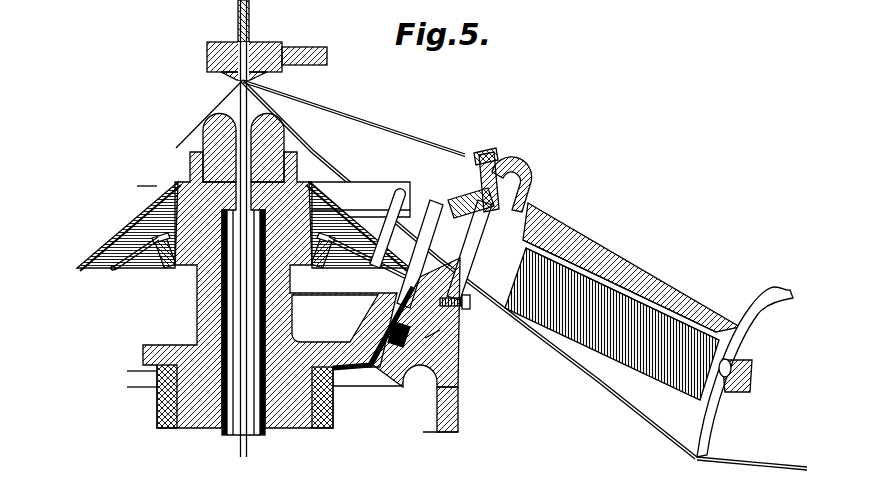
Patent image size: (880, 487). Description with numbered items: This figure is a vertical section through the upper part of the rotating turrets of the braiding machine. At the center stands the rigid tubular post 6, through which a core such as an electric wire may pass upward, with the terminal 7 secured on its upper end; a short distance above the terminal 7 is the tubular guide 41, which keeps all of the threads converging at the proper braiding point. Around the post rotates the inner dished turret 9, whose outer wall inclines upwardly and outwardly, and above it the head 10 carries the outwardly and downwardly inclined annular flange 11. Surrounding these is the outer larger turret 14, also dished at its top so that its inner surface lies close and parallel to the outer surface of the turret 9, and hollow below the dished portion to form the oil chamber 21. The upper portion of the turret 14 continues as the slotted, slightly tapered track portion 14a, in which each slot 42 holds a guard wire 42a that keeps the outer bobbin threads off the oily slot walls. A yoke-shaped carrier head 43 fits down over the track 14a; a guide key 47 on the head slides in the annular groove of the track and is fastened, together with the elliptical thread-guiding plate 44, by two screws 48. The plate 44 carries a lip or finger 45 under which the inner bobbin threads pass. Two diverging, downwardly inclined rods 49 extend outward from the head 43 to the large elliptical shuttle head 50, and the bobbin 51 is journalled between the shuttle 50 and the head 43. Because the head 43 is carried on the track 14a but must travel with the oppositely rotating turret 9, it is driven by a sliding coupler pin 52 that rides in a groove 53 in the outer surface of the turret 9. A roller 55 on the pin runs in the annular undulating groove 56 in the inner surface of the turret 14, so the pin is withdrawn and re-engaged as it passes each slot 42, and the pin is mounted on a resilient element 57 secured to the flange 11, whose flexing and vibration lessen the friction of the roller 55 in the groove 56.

The tubular rigid post 6 is at (232, 432).
The terminal 7 is at (215, 122).
The turret 9 is at (355, 338).
The head 10 is at (176, 183).
The annular flange 11 is at (158, 262).
The outer turret 14 is at (490, 347).
The track portion 14a is at (387, 193).
The oil chamber 21 is at (445, 405).
The tubular guide 41 is at (213, 46).
The slot 42 is at (423, 204).
The guard wire 42a is at (420, 192).
The head 43 is at (513, 183).
The thread-guiding plate 44 is at (492, 163).
The lip or finger 45 is at (480, 158).
The guide key 47 is at (500, 201).
The screws 48 is at (458, 197).
The rods 49 is at (630, 303).
The head 50 is at (772, 304).
The bobbin 51 is at (587, 237).
The coupler pin 52 is at (462, 305).
The grooves 53 is at (371, 368).
The roller 55 is at (402, 347).
The annular undulating groove 56 is at (425, 338).
The resilient element 57 is at (121, 268).